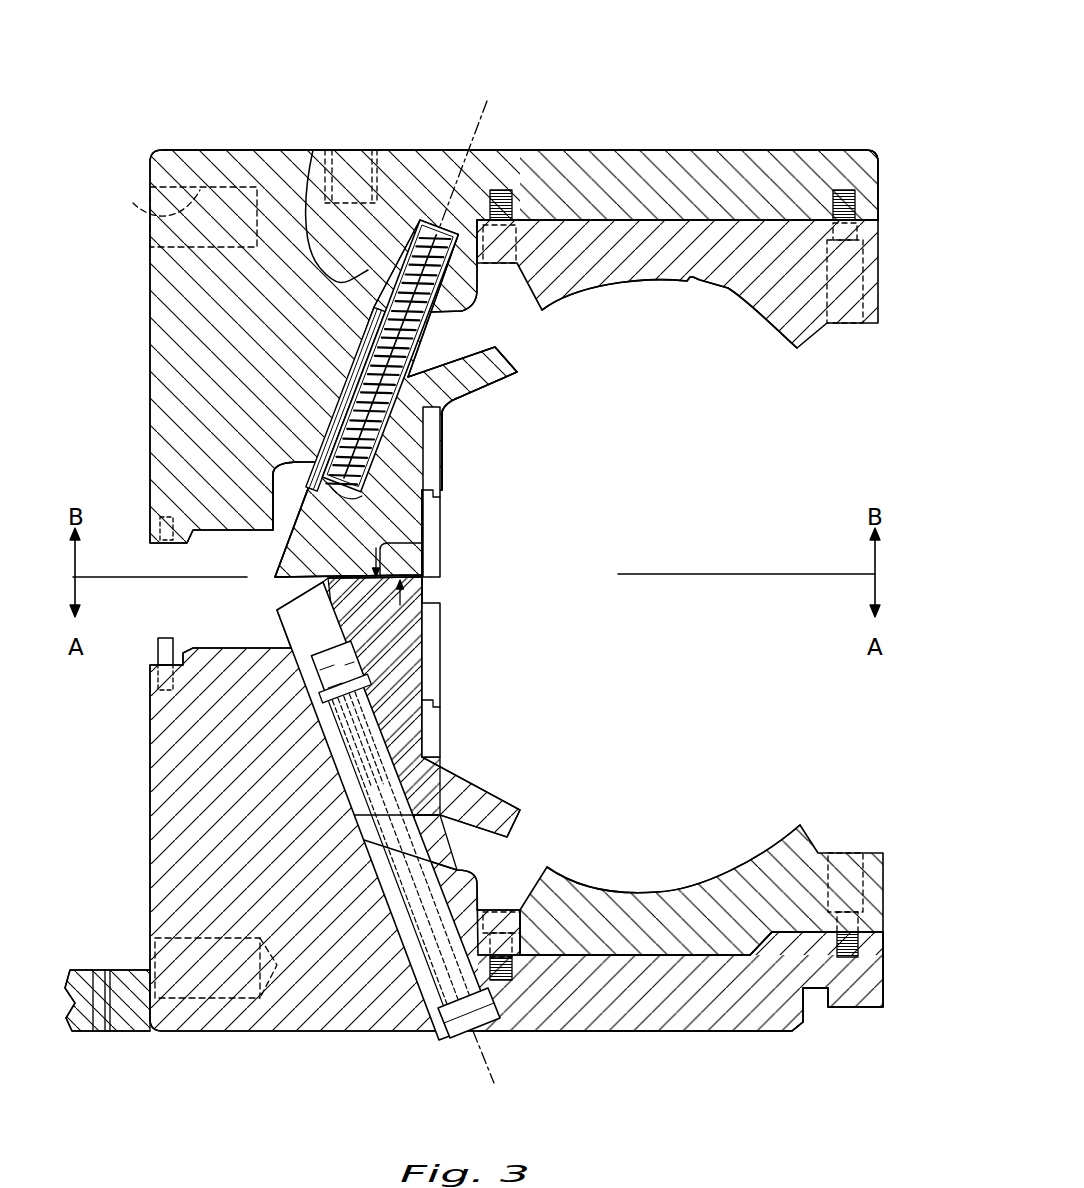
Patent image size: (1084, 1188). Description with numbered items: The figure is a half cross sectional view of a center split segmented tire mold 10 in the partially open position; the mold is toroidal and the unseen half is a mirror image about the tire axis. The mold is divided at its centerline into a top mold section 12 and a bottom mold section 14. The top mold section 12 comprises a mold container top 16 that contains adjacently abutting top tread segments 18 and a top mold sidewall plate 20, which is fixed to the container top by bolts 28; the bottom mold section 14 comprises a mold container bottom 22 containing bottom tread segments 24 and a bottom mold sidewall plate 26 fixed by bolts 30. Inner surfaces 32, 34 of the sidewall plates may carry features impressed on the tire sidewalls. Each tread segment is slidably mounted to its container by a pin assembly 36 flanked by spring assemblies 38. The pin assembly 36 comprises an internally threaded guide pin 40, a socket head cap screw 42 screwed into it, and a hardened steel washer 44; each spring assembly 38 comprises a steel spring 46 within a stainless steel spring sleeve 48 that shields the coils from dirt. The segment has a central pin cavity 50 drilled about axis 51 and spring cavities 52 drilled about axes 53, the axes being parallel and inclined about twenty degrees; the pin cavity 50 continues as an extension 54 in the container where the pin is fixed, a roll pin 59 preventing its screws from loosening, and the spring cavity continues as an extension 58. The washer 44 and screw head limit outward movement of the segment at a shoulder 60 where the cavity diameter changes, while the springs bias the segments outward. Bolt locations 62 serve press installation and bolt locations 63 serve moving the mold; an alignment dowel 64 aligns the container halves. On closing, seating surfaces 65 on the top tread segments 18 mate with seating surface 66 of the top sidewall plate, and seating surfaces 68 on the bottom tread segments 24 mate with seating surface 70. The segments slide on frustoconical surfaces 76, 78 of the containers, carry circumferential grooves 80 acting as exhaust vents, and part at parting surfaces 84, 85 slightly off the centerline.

The tire mold 10 is at (640, 62).
The top mold section 12 is at (150, 372).
The bottom mold section 14 is at (150, 800).
The mold container top 16 is at (672, 165).
The top tread segments 18 is at (437, 420).
The top mold sidewall plate 20 is at (630, 263).
The mold container bottom 22 is at (700, 1012).
The bottom tread segments 24 is at (383, 630).
The bottom mold sidewall plate 26 is at (648, 913).
The bolts 28 is at (512, 190).
The bolts 30 is at (513, 967).
The inner surface 32 is at (771, 328).
The inner surface 34 is at (735, 865).
The pin assembly 36 is at (352, 813).
The spring assemblies 38 is at (388, 278).
The guide pin 40 is at (393, 863).
The socket head cap screw 42 is at (323, 677).
The hardened steel washer 44 is at (327, 700).
The steel spring 46 is at (343, 487).
The spring sleeve 48 is at (356, 347).
The pin cavity 50 is at (320, 632).
The axis 51 is at (482, 1058).
The spring cavities 52 is at (345, 355).
The axes 53 is at (483, 108).
The extension of the pin cavity 54 is at (403, 912).
The extension of the spring cavity 58 is at (313, 150).
The roll pin 59 is at (494, 1003).
The shoulder 60 is at (385, 740).
The bolt locations 62 is at (375, 148).
The bolt locations 63 is at (238, 1062).
The alignment dowel 64 is at (158, 652).
The seating surfaces 65 is at (516, 357).
The seating surface 66 is at (528, 298).
The seating surfaces 68 is at (513, 827).
The seating surface 70 is at (535, 873).
The frustoconical surface 76 is at (380, 305).
The frustoconical surface 78 is at (393, 840).
The circumferential grooves 80 is at (273, 530).
The parting surface 84 is at (395, 548).
The parting surface 85 is at (420, 615).